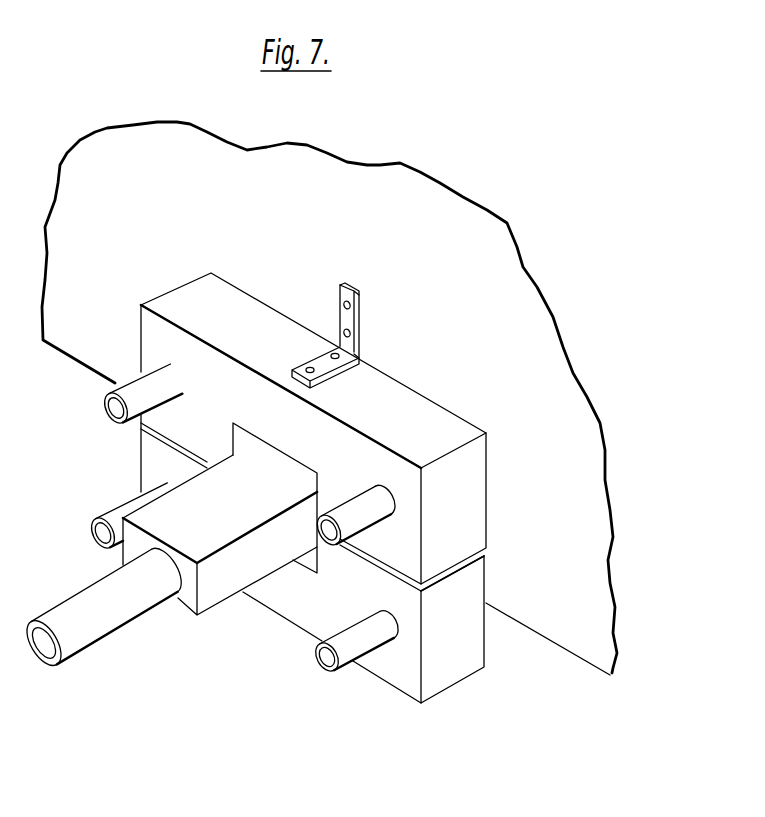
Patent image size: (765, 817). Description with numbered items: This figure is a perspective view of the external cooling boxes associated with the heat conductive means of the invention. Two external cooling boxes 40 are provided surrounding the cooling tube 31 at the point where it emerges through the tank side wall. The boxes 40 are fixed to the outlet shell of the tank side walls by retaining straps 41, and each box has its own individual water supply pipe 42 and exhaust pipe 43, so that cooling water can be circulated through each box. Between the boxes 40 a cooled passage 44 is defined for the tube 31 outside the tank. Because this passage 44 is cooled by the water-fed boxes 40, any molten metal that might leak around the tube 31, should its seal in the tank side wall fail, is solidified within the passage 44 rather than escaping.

The cooling tube 31 is at (215, 587).
The external cooling box 40 is at (480, 494).
The retaining strap 41 is at (352, 318).
The water supply pipe 42 is at (172, 385).
The exhaust pipe 43 is at (132, 505).
The cooled passage 44 is at (242, 440).